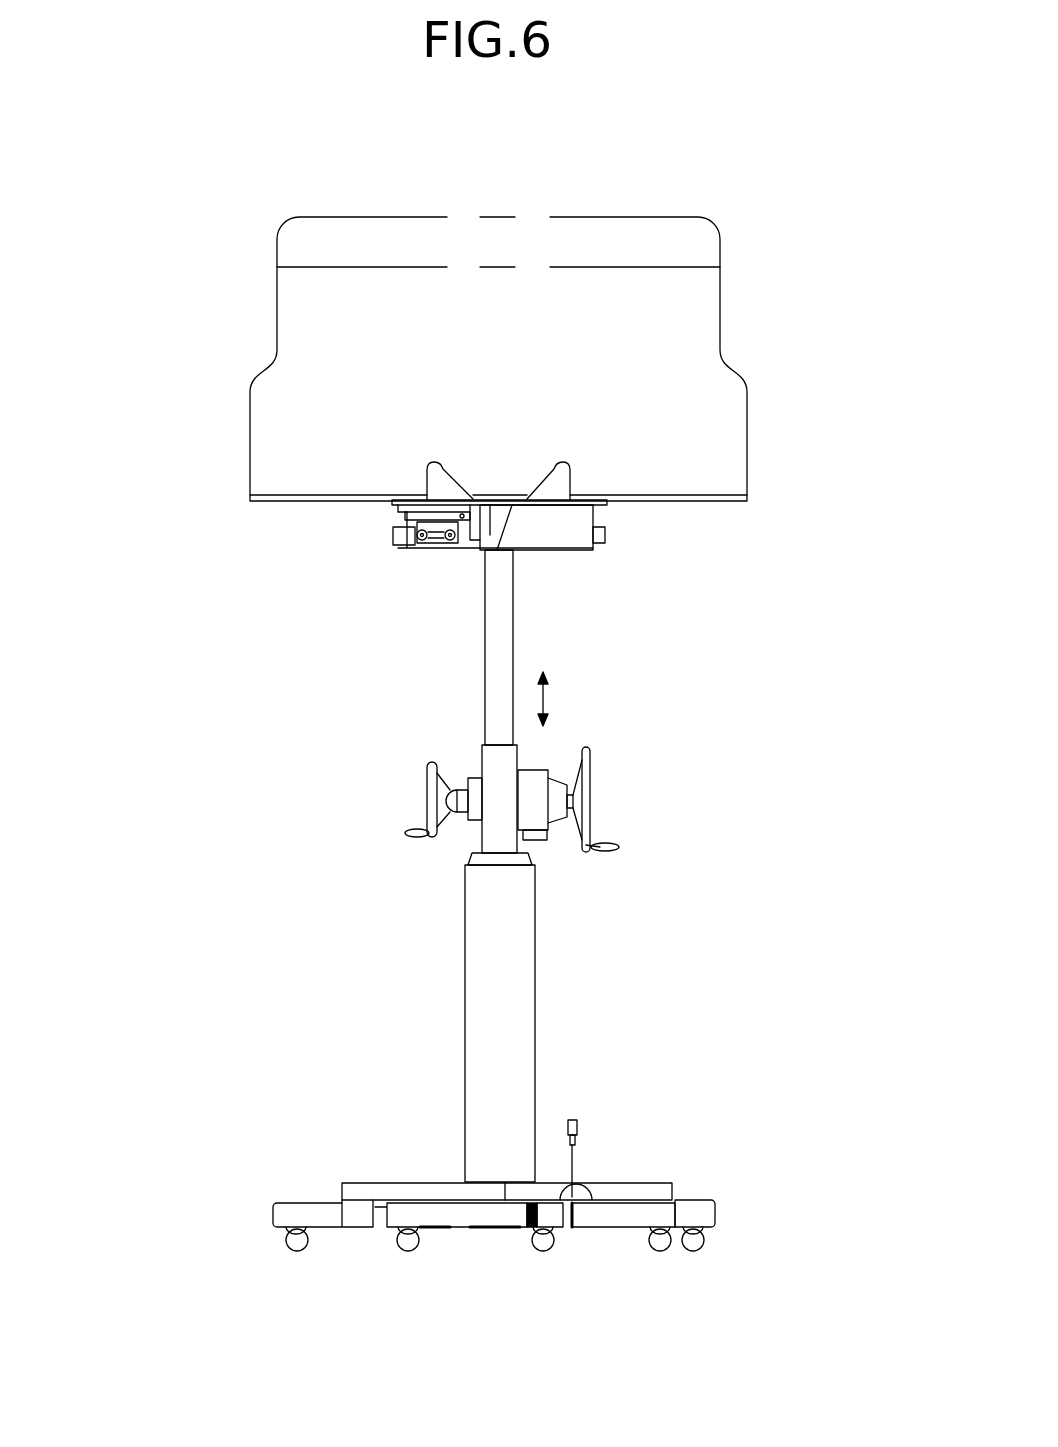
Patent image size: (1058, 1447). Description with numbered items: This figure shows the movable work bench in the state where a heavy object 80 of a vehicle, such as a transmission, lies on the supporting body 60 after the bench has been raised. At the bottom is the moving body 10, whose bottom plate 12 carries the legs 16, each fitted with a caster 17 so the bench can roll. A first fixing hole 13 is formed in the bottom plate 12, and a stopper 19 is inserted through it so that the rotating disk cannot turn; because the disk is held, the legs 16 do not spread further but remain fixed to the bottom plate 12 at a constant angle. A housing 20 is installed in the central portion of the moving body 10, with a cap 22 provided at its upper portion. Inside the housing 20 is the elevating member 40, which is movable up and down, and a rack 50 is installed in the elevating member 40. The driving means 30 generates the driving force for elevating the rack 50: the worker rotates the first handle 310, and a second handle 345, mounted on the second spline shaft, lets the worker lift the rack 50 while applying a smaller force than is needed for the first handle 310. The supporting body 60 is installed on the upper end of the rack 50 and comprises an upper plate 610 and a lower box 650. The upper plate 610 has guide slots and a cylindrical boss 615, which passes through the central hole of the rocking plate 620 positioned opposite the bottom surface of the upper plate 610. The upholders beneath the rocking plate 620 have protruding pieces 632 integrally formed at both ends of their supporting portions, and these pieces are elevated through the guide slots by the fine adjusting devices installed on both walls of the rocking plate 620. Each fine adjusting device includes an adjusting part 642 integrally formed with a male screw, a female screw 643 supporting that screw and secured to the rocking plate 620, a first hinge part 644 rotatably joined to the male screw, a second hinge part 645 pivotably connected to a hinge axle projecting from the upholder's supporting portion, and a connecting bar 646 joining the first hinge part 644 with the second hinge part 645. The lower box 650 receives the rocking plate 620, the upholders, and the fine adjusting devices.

The moving body 10 is at (667, 1163).
The bottom plate 12 is at (410, 1182).
The first fixing hole 13 is at (577, 1196).
The legs 16 is at (702, 1205).
The caster 17 is at (693, 1243).
The stopper 19 is at (577, 1125).
The housing 20 is at (470, 1017).
The cap 22 is at (465, 860).
The driving means 30 is at (537, 778).
The elevating member 40 is at (497, 760).
The rack 50 is at (500, 650).
The supporting body 60 is at (573, 582).
The wafer cassette 80 is at (718, 318).
The first handle 310 is at (410, 829).
The second handle 345 is at (605, 840).
The upper plate 610 is at (605, 500).
The cylindrical boss 615 is at (492, 513).
The rocking plate 620 is at (473, 497).
The protruding pieces 632 is at (563, 482).
The adjusting part 642 is at (392, 533).
The female screw 643 is at (403, 548).
The first hinge part 644 is at (413, 543).
The second hinge part 645 is at (443, 543).
The connecting bar 646 is at (408, 543).
The lower box 650 is at (577, 538).